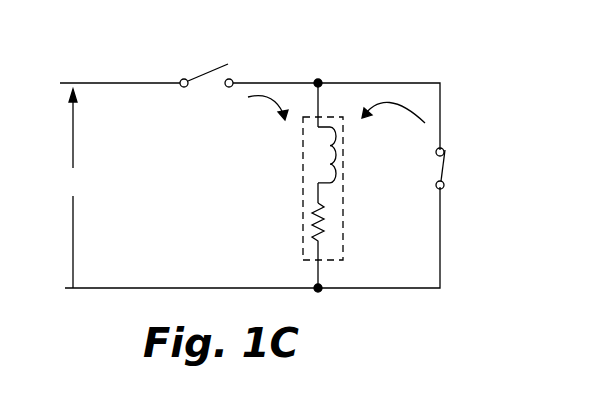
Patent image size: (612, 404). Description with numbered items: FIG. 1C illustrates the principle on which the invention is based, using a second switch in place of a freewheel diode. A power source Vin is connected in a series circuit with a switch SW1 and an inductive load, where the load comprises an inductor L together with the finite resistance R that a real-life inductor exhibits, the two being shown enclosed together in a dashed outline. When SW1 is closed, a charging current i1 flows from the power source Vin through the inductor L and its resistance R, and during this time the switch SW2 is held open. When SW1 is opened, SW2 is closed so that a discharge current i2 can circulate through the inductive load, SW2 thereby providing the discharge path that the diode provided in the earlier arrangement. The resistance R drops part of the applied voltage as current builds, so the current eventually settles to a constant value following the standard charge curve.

The switch SW1 is at (206, 65).
The switch SW2 is at (459, 168).
The power source Vin is at (70, 188).
The inductor L is at (305, 155).
The inductor resistance R is at (299, 224).
The charging current i1 is at (265, 113).
The discharge current i2 is at (393, 116).